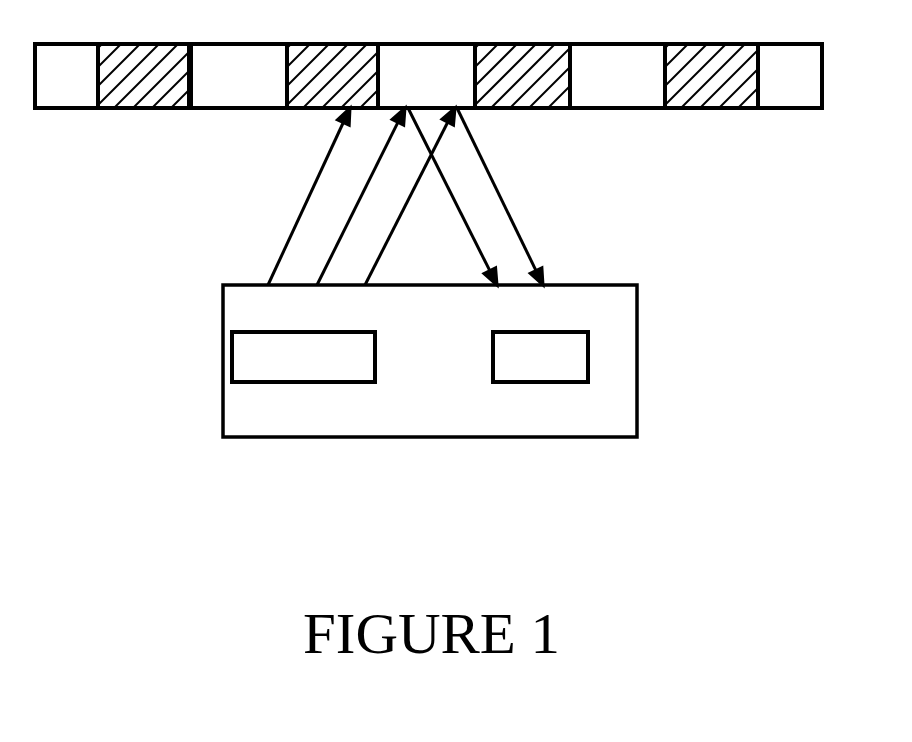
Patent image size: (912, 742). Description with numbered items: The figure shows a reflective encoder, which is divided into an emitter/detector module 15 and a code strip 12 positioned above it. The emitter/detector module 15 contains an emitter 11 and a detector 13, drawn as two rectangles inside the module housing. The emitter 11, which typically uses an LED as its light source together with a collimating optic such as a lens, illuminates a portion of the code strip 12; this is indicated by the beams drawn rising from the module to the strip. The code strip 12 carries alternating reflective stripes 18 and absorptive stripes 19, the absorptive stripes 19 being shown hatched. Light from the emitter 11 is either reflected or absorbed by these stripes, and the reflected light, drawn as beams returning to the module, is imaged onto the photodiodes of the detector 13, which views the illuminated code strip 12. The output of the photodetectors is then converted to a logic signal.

The emitter 11 is at (326, 372).
The code strip 12 is at (782, 108).
The detector 13 is at (512, 374).
The emitter/detector module 15 is at (639, 361).
The reflective stripes 18 is at (246, 106).
The absorptive stripes 19 is at (130, 106).